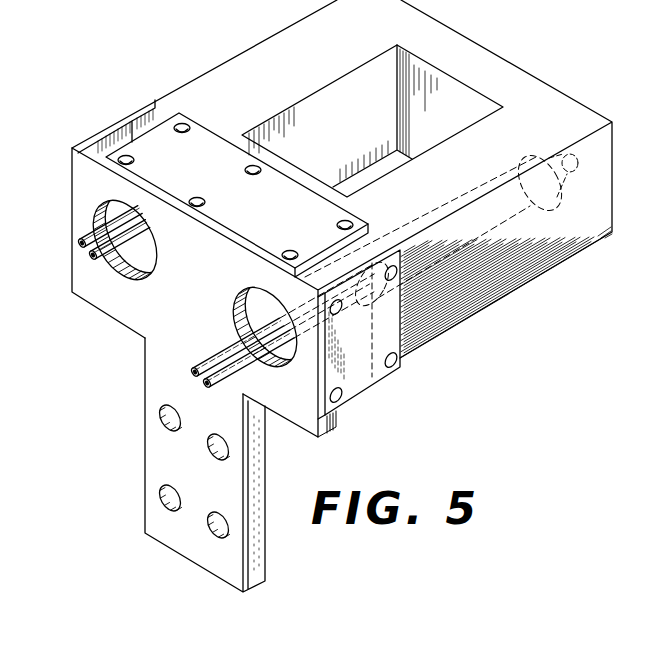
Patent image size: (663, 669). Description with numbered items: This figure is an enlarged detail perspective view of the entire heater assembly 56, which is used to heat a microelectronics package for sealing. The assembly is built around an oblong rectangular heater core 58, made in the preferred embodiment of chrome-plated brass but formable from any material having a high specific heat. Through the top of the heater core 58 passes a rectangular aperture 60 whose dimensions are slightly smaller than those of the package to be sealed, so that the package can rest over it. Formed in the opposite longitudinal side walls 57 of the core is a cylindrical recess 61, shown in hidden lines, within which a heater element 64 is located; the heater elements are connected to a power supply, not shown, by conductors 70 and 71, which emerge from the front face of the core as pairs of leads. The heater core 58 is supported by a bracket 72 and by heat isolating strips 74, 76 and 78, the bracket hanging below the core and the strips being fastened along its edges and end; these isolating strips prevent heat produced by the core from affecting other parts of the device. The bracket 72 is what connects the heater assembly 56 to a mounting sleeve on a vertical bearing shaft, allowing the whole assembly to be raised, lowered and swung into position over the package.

The heater assembly 56 is at (478, 327).
The longitudinal side walls 57 is at (275, 37).
The heater core 58 is at (242, 59).
The rectangular aperture 60 is at (446, 79).
The cylindrical recess 61 is at (556, 197).
The heater element 64 is at (456, 259).
The conductor 70 is at (78, 262).
The conductor 71 is at (188, 377).
The bracket 72 is at (143, 367).
The heat isolating strip 74 is at (116, 128).
The heat isolating strip 76 is at (240, 232).
The heat isolating strip 78 is at (366, 387).